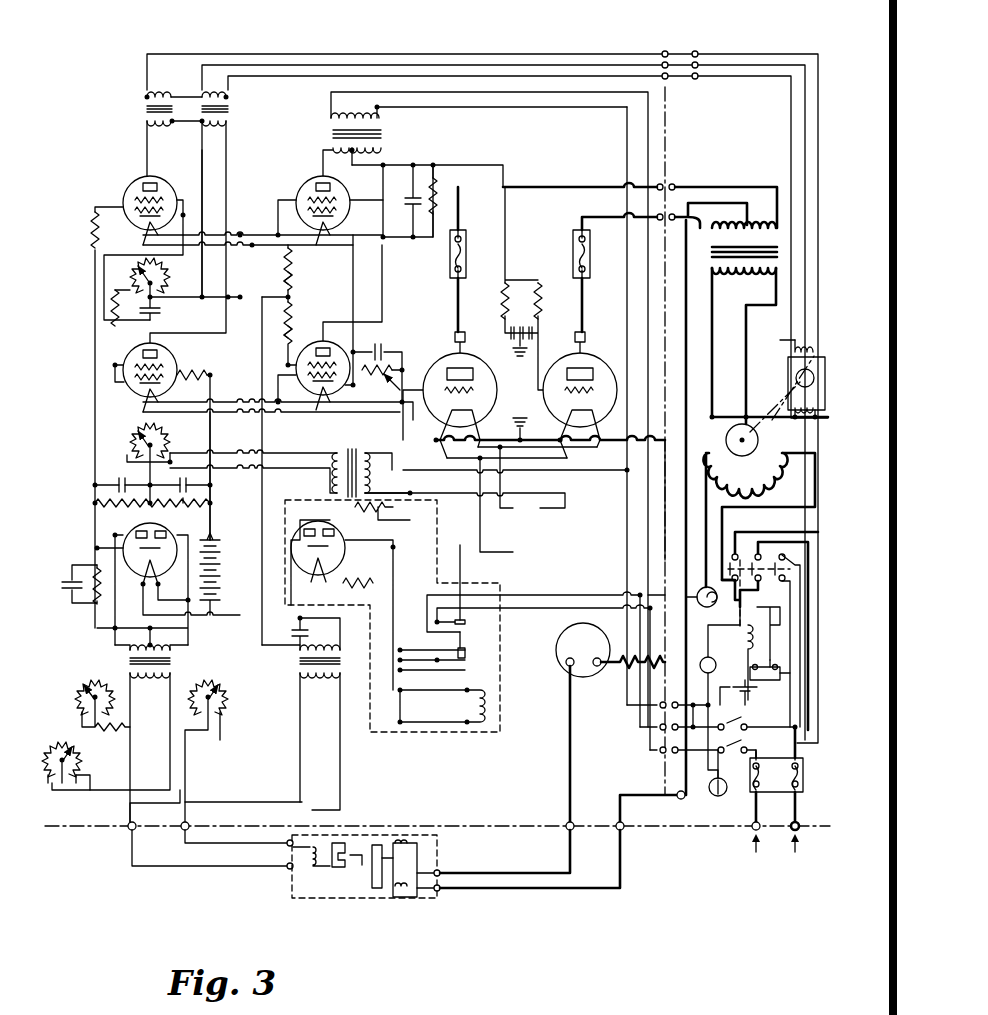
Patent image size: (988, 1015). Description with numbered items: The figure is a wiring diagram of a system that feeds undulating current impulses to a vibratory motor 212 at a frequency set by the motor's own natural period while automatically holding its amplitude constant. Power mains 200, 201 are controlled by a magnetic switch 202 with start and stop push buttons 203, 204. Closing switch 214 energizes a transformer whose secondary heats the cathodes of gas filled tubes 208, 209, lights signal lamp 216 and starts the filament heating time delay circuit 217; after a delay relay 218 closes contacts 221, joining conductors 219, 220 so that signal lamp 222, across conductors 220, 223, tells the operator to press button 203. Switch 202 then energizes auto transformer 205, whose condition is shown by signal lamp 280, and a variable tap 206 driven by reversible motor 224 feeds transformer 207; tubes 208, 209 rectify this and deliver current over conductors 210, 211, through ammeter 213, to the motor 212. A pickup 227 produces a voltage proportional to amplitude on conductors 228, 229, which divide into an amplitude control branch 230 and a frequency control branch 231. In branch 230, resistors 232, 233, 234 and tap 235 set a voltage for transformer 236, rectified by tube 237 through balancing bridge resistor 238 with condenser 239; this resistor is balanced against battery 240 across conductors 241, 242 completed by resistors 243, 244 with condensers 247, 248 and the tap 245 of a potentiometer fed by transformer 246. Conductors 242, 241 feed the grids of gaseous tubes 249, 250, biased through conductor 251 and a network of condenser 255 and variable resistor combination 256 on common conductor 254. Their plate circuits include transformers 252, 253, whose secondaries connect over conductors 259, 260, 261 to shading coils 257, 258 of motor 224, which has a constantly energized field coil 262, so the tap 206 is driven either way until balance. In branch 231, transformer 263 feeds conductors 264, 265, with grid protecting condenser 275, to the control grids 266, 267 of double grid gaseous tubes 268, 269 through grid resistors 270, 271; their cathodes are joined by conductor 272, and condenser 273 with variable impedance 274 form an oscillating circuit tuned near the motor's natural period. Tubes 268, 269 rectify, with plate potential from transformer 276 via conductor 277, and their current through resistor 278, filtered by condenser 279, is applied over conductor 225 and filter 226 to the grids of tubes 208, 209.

The power main 200 is at (752, 808).
The power main 201 is at (797, 808).
The magnetic switch 202 is at (738, 632).
The start push button 203 is at (748, 696).
The stop push button 204 is at (766, 681).
The auto transformer 205 is at (773, 481).
The variable tap 206 is at (738, 468).
The transformer 207 is at (763, 225).
The gas filled tube 208 is at (444, 342).
The gas filled tube 209 is at (586, 342).
The conductor 210 is at (663, 495).
The conductor 211 is at (692, 320).
The vibratory motor 212 is at (400, 902).
The ammeter 213 is at (587, 668).
The switch 214 is at (725, 784).
The signal lamp 216 is at (706, 797).
The filament heating time delay circuit 217 is at (366, 721).
The relay 218 is at (488, 703).
The conductor 219 is at (577, 594).
The conductor 220 is at (597, 92).
The normally opening contacts 221 is at (460, 600).
The signal lamp 222 is at (699, 667).
The conductor 223 is at (625, 287).
The reversible motor 224 is at (796, 376).
The conductor 225 is at (508, 186).
The filter 226 is at (522, 300).
The pickup 227 is at (310, 882).
The conductor 228 is at (150, 868).
The conductor 229 is at (208, 845).
The amplitude control branch 230 is at (150, 768).
The frequency control branch 231 is at (322, 760).
The adjustable maximum amplitude control resistor 232 is at (82, 680).
The adjustable minimum amplitude control resistor 233 is at (222, 688).
The amplitude control resistor 234 is at (62, 742).
The variable tap 235 is at (66, 760).
The transformer 236 is at (180, 660).
The full-wave rectifier vacuum tube 237 is at (127, 528).
The balancing bridge resistor 238 is at (97, 569).
The by-pass filter condenser 239 is at (68, 598).
The constant voltage battery 240 is at (214, 550).
The conductor 241 is at (210, 422).
The conductor 242 is at (94, 451).
The resistor 243 is at (110, 503).
The resistor 244 is at (183, 506).
The variable tap 245 is at (156, 444).
The transformer 246 is at (350, 452).
The filtering condenser 247 is at (119, 477).
The filtering condenser 248 is at (188, 475).
The gaseous tube 249 is at (130, 182).
The gaseous tube 250 is at (177, 362).
The conductor 251 is at (218, 237).
The transformer 252 is at (140, 104).
The transformer 253 is at (232, 104).
The common conductor 254 is at (205, 170).
The condenser 255 is at (162, 311).
The variable resistor combination 256 is at (128, 280).
The shading coil 257 is at (795, 352).
The shading coil 258 is at (800, 345).
The conductor 259 is at (388, 52).
The conductor 260 is at (463, 64).
The conductor 261 is at (530, 76).
The field coil 262 is at (782, 403).
The transformer 263 is at (298, 680).
The conductor 264 is at (277, 428).
The conductor 265 is at (268, 296).
The control grid 266 is at (334, 206).
The control grid 267 is at (338, 378).
The double grid gaseous tube 268 is at (318, 176).
The double grid gaseous tube 269 is at (310, 386).
The grid resistor 270 is at (292, 273).
The grid resistor 271 is at (292, 324).
The conductor 272 is at (352, 283).
The condenser 273 is at (384, 350).
The variable impedance 274 is at (420, 417).
The grid protecting condenser 275 is at (306, 634).
The transformer 276 is at (384, 133).
The conductor 277 is at (396, 165).
The resistor 278 is at (437, 192).
The sustaining and filtering condenser 279 is at (411, 208).
The signal lamp 280 is at (700, 604).